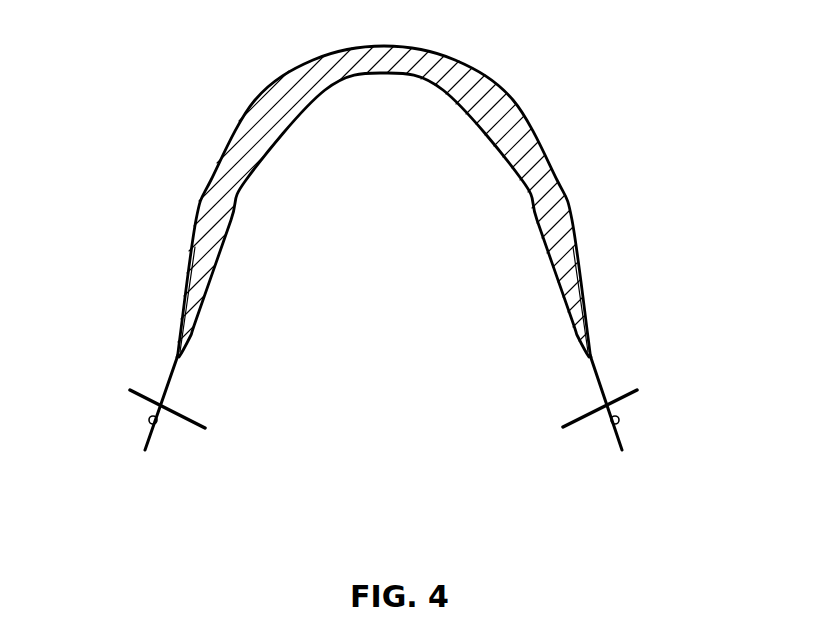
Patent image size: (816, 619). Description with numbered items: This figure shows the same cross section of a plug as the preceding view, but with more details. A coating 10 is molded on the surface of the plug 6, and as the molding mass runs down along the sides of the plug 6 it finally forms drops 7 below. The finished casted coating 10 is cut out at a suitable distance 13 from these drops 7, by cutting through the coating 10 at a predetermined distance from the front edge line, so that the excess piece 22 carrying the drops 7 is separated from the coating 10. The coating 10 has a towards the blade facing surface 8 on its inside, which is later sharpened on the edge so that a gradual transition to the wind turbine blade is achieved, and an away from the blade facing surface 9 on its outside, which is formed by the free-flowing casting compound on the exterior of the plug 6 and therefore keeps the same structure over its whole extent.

The plug 6 is at (327, 360).
The drops 7 is at (620, 423).
The towards the blade facing surface 8 is at (542, 235).
The away from the blade facing surface 9 is at (418, 47).
The coating 10 is at (386, 236).
The predetermined place on the outer side 13 is at (608, 407).
The excess piece 22 is at (616, 410).